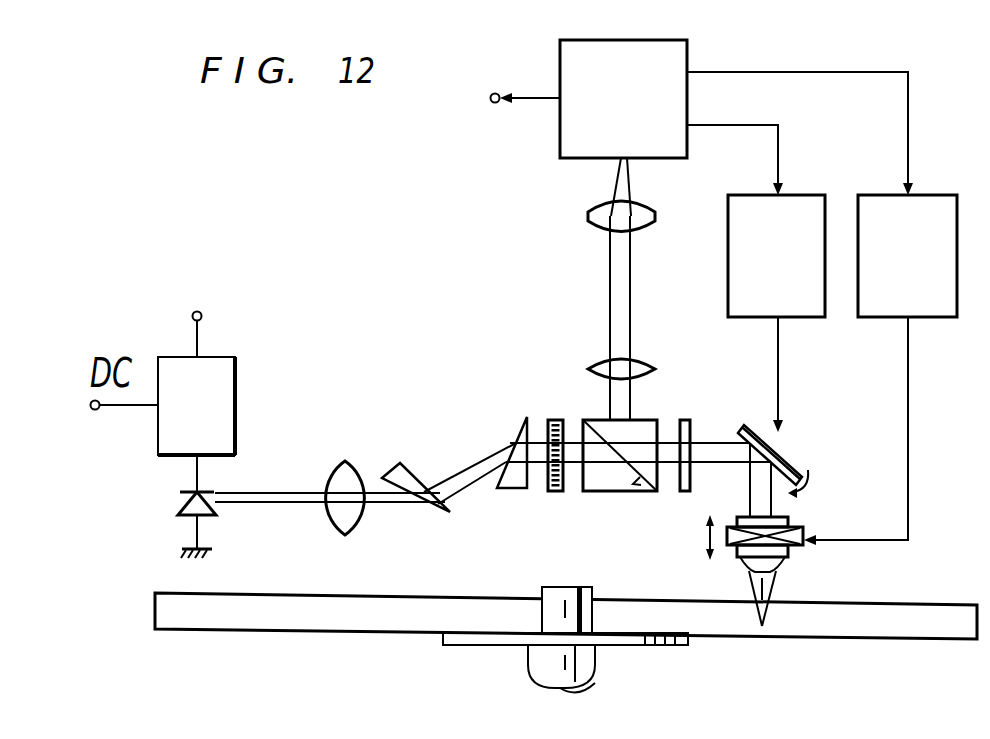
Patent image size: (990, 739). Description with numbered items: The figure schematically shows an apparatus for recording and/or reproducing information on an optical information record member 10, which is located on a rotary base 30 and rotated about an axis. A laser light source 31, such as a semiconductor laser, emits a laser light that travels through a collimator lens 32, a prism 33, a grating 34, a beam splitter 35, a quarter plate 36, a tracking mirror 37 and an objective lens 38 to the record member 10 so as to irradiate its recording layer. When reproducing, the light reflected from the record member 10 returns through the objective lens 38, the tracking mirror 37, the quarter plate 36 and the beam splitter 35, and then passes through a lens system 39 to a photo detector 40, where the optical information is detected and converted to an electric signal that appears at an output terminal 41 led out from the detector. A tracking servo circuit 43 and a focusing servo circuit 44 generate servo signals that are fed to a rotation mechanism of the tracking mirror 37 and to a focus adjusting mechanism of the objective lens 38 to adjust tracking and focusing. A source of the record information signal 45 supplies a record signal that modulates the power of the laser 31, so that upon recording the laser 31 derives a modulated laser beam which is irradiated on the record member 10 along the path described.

The optical information record member 10 is at (968, 598).
The rotary base 30 is at (565, 647).
The laser light source 31 is at (208, 518).
The collimator lens 32 is at (360, 525).
The prism 33 is at (466, 437).
The grating 34 is at (555, 492).
The beam splitter 35 is at (635, 492).
The quarter plate 36 is at (692, 420).
The tracking mirror 37 is at (803, 452).
The objective lens 38 is at (800, 514).
The lens system 39 is at (692, 331).
The photo detector 40 is at (578, 158).
The output terminal 41 is at (495, 103).
The tracking servo circuit 43 is at (800, 317).
The focusing servo circuit 44 is at (930, 317).
The source of the record information signal 45 is at (197, 311).